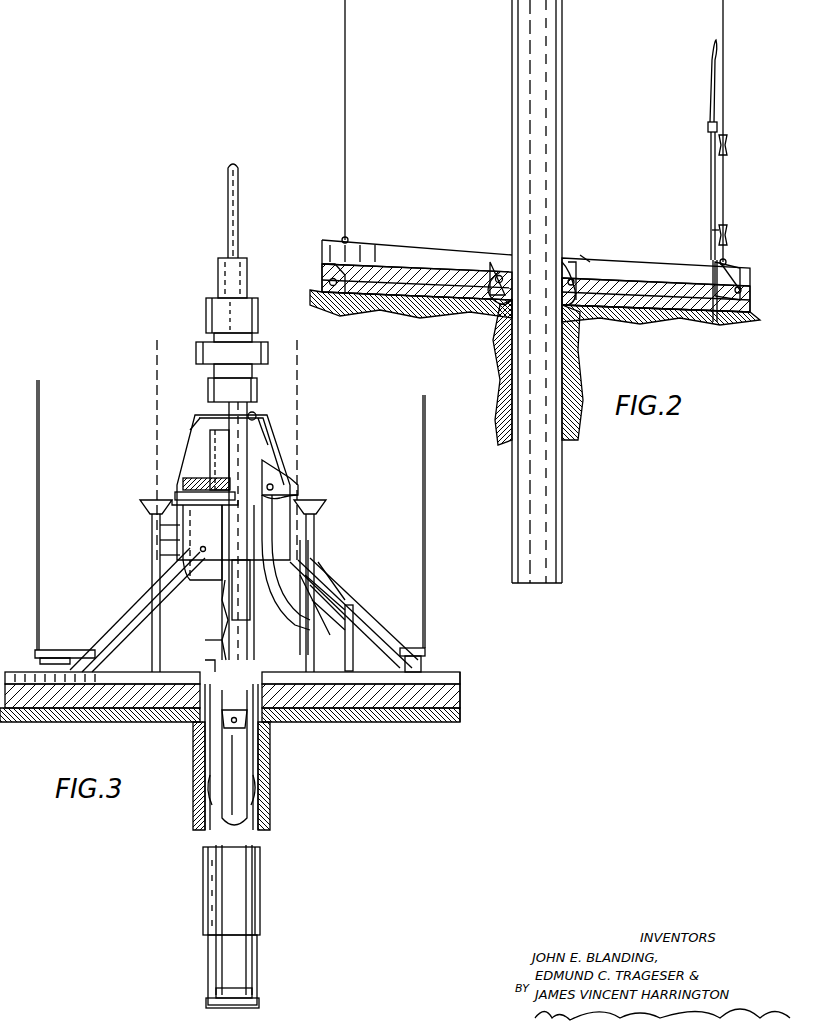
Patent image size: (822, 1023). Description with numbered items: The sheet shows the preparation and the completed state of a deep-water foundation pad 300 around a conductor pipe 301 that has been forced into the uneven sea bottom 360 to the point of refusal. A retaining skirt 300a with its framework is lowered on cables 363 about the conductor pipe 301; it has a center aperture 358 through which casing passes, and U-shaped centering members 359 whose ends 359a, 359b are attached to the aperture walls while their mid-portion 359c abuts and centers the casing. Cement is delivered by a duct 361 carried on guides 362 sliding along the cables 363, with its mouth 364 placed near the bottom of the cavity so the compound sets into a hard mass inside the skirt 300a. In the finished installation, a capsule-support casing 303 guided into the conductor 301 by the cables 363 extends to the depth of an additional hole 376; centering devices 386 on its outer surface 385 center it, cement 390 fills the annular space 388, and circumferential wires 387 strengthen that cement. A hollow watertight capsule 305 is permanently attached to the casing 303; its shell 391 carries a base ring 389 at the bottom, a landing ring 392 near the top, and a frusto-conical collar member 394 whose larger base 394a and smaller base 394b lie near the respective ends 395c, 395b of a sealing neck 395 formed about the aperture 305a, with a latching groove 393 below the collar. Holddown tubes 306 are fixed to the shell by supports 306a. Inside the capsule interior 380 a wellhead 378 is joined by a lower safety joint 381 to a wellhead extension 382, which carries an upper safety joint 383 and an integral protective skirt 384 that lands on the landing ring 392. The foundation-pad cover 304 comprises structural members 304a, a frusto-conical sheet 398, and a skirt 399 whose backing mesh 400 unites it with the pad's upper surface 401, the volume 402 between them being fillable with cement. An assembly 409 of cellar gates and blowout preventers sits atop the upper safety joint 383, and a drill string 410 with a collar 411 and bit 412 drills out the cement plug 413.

In FIG. 2, the foundation pad 300 is at (432, 238).
In FIG. 3, the foundation pad 300 is at (480, 688).
In FIG. 2, the retaining skirt 300a is at (322, 270).
In FIG. 2, the conductor pipe 301 is at (562, 500).
In FIG. 3, the conductor pipe 301 is at (258, 896).
In FIG. 3, the capsule-support casing 303 is at (252, 820).
In FIG. 3, the foundation-pad cover 304 is at (118, 600).
In FIG. 3, the structural members 304a is at (348, 620).
In FIG. 3, the capsule 305 is at (320, 600).
In FIG. 3, the aperture 305a is at (269, 521).
In FIG. 3, the holddown tubes 306 is at (152, 527).
In FIG. 3, the supports 306a is at (197, 566).
In FIG. 2, the center aperture 358 is at (572, 262).
In FIG. 2, the drill-string-centering members 359 is at (506, 268).
In FIG. 2, the end of centering member 359a is at (585, 258).
In FIG. 2, the end of centering member 359b is at (570, 310).
In FIG. 2, the mid-portion of centering member 359c is at (508, 296).
In FIG. 2, the sea bottom 360 is at (681, 360).
In FIG. 2, the duct 361 is at (712, 78).
In FIG. 2, the guides 362 is at (728, 142).
In FIG. 3, the cables 363 is at (40, 432).
In FIG. 2, the mouth of duct 364 is at (714, 323).
In FIG. 3, the additional hole 376 is at (258, 966).
In FIG. 3, the wellhead 378 is at (250, 580).
In FIG. 3, the capsule interior 380 is at (270, 548).
In FIG. 3, the lower safety joint 381 is at (222, 590).
In FIG. 3, the wellhead extension 382 is at (248, 530).
In FIG. 3, the upper safety joint 383 is at (208, 392).
In FIG. 3, the protective skirt 384 is at (270, 450).
In FIG. 3, the outer surface of capsule-support casing 385 is at (210, 828).
In FIG. 3, the centering devices 386 is at (255, 790).
In FIG. 3, the wires 387 is at (252, 921).
In FIG. 3, the annular space 388 is at (258, 760).
In FIG. 3, the base ring 389 is at (250, 655).
In FIG. 3, the cement 390 is at (258, 868).
In FIG. 3, the shell 391 is at (310, 572).
In FIG. 3, the landing ring 392 is at (205, 542).
In FIG. 3, the latching groove 393 is at (177, 494).
In FIG. 3, the collar member 394 is at (220, 484).
In FIG. 3, the larger base of collar member 394a is at (280, 485).
In FIG. 3, the smaller base of collar member 394b is at (185, 482).
In FIG. 3, the sealing neck 395 is at (262, 420).
In FIG. 3, the rolled-home end of sealing neck 395b is at (208, 418).
In FIG. 3, the flared end of sealing neck 395c is at (300, 497).
In FIG. 3, the frusto-conical sheet 398 is at (178, 632).
In FIG. 3, the skirt 399 is at (128, 676).
In FIG. 3, the backing mesh 400 is at (385, 688).
In FIG. 3, the upper surface of pad 401 is at (442, 672).
In FIG. 3, the volume 402 is at (362, 650).
In FIG. 3, the assembly of cellar gates and blowout preventers 409 is at (203, 298).
In FIG. 3, the drill string 410 is at (228, 206).
In FIG. 3, the collar 411 is at (230, 668).
In FIG. 3, the bit 412 is at (248, 722).
In FIG. 3, the plug 413 is at (226, 992).